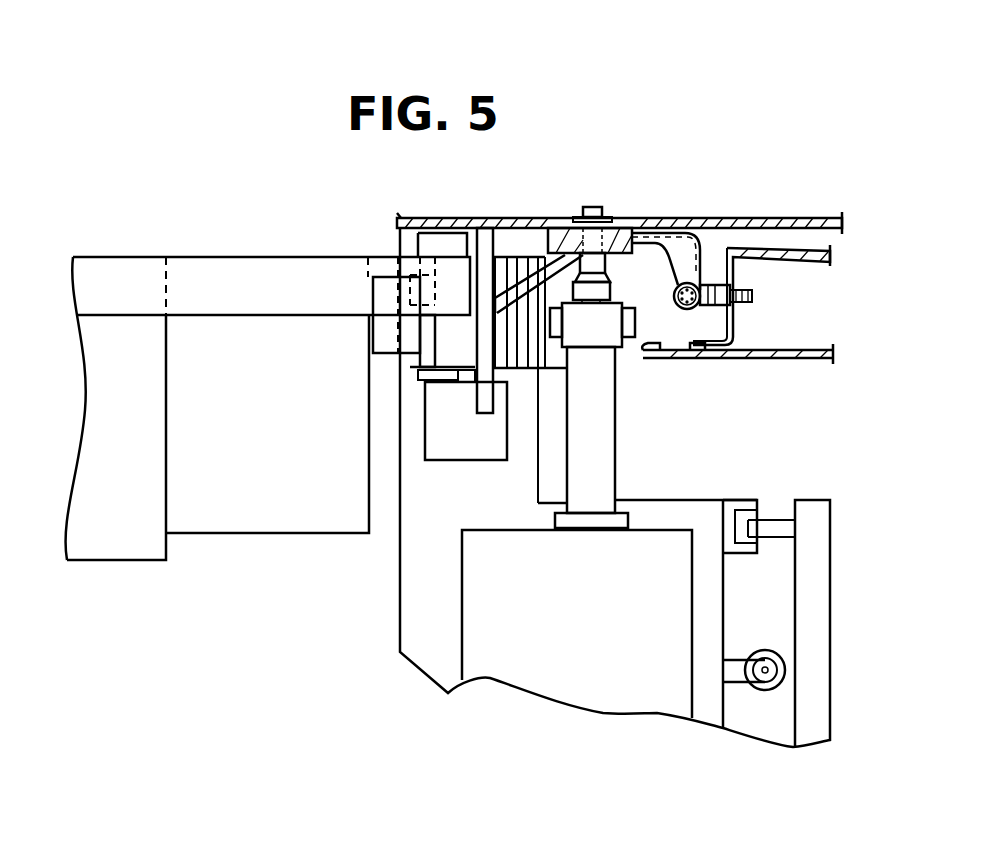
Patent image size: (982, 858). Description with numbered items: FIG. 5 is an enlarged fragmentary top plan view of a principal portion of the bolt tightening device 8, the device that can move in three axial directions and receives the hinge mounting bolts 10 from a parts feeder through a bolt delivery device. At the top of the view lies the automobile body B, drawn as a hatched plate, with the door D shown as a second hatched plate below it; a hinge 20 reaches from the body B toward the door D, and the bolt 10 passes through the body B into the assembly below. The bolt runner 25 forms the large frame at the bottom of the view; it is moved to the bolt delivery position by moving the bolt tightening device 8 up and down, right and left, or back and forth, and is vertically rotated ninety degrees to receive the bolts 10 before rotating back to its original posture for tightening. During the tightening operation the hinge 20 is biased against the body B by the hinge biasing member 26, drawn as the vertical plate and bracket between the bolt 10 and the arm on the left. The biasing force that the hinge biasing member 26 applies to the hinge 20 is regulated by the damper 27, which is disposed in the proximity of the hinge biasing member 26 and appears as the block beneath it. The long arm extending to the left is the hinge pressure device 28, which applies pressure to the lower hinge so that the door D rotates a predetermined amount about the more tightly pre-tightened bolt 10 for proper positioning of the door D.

The hinge pressure device 28 is at (228, 270).
The hinge biasing member 26 is at (495, 223).
The bolt 10 is at (592, 207).
The hinge 20 is at (693, 212).
The automobile body B is at (812, 217).
The door D is at (818, 360).
The damper 27 is at (463, 447).
The bolt runner 25 is at (523, 667).
The bolt tightening device 8 is at (306, 650).